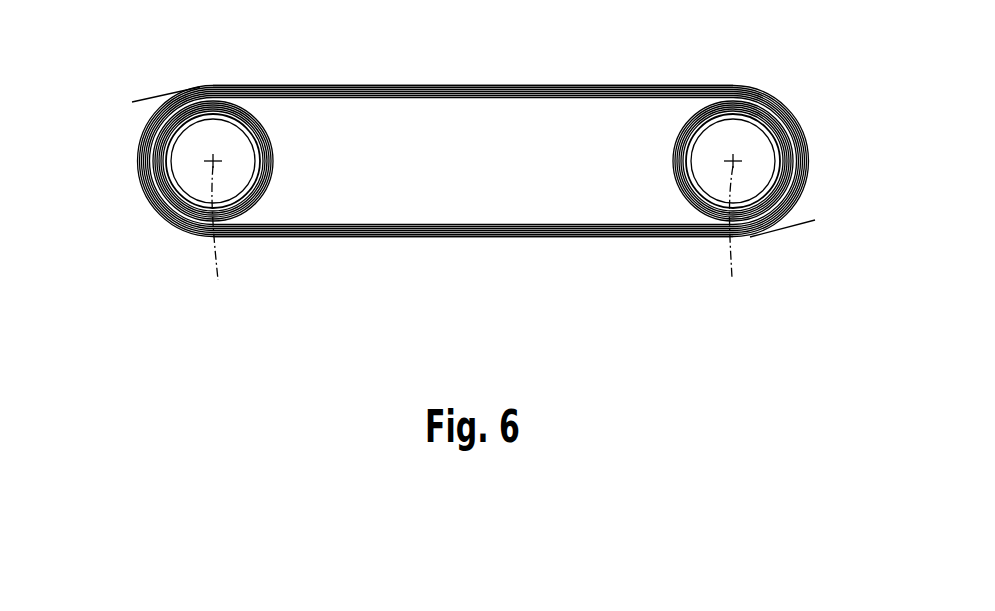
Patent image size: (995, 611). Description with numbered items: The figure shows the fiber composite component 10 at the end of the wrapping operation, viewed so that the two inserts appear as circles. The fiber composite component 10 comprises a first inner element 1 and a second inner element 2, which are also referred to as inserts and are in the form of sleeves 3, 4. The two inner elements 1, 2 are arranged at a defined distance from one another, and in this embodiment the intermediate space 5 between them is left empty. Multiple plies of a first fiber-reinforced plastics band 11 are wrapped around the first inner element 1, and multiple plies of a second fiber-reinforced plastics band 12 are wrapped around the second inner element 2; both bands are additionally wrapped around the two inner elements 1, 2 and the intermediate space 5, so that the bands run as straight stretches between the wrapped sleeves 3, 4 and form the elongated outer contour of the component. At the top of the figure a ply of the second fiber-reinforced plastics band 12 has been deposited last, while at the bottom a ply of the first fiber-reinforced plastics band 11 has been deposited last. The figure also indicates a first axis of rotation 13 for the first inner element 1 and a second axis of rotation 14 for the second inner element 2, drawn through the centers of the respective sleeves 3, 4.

The first inner element 1 is at (178, 168).
The second inner element 2 is at (765, 143).
The sleeve 3 is at (223, 120).
The sleeve 4 is at (717, 120).
The intermediate space 5 is at (486, 177).
The fiber composite component 10 is at (473, 218).
The first fiber-reinforced plastics band 11 is at (142, 102).
The second fiber-reinforced plastics band 12 is at (815, 222).
The first axis of rotation 13 is at (227, 225).
The second axis of rotation 14 is at (719, 226).